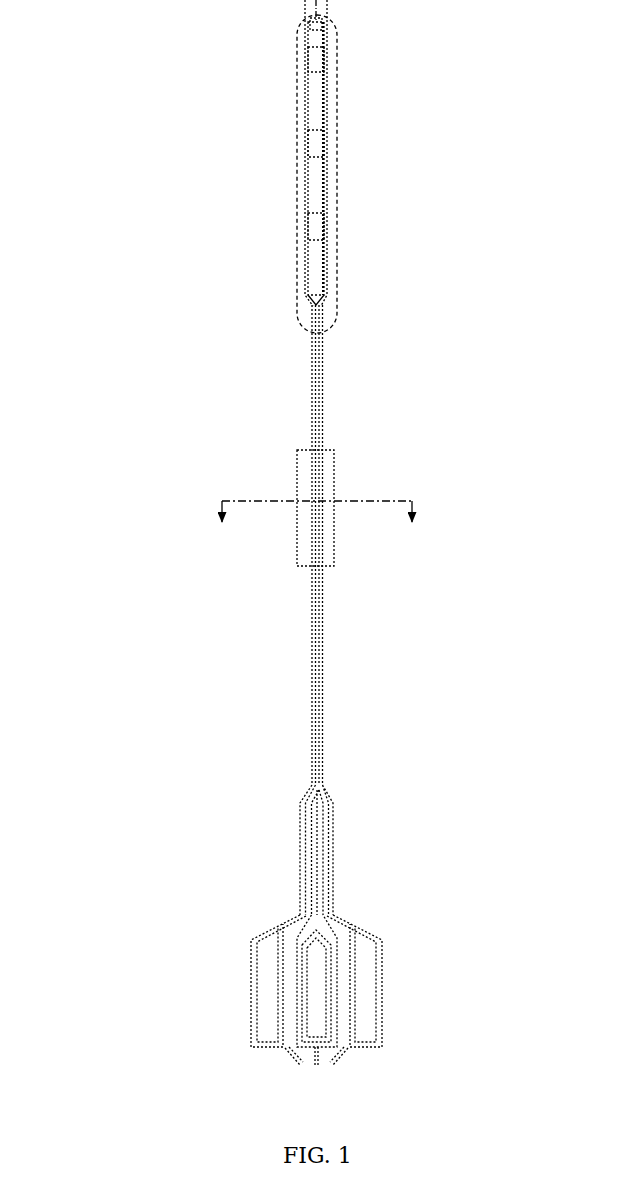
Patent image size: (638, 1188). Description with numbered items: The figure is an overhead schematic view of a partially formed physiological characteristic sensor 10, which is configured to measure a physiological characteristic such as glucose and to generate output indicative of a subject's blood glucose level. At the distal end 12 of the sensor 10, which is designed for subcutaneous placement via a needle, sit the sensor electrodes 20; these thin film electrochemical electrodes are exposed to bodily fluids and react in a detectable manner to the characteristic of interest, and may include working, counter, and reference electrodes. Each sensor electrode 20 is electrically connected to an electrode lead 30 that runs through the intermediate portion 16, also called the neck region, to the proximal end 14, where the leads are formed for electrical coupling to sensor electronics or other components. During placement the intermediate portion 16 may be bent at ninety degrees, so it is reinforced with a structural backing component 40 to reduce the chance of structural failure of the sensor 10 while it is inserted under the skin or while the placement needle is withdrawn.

The physiological characteristic sensor 10 is at (258, 532).
The distal end 12 is at (294, 166).
The proximal end 14 is at (170, 1032).
The intermediate portion 16 is at (322, 610).
The sensor electrodes 20 is at (315, 104).
The electrode lead 30 is at (316, 384).
The structural backing component 40 is at (334, 468).